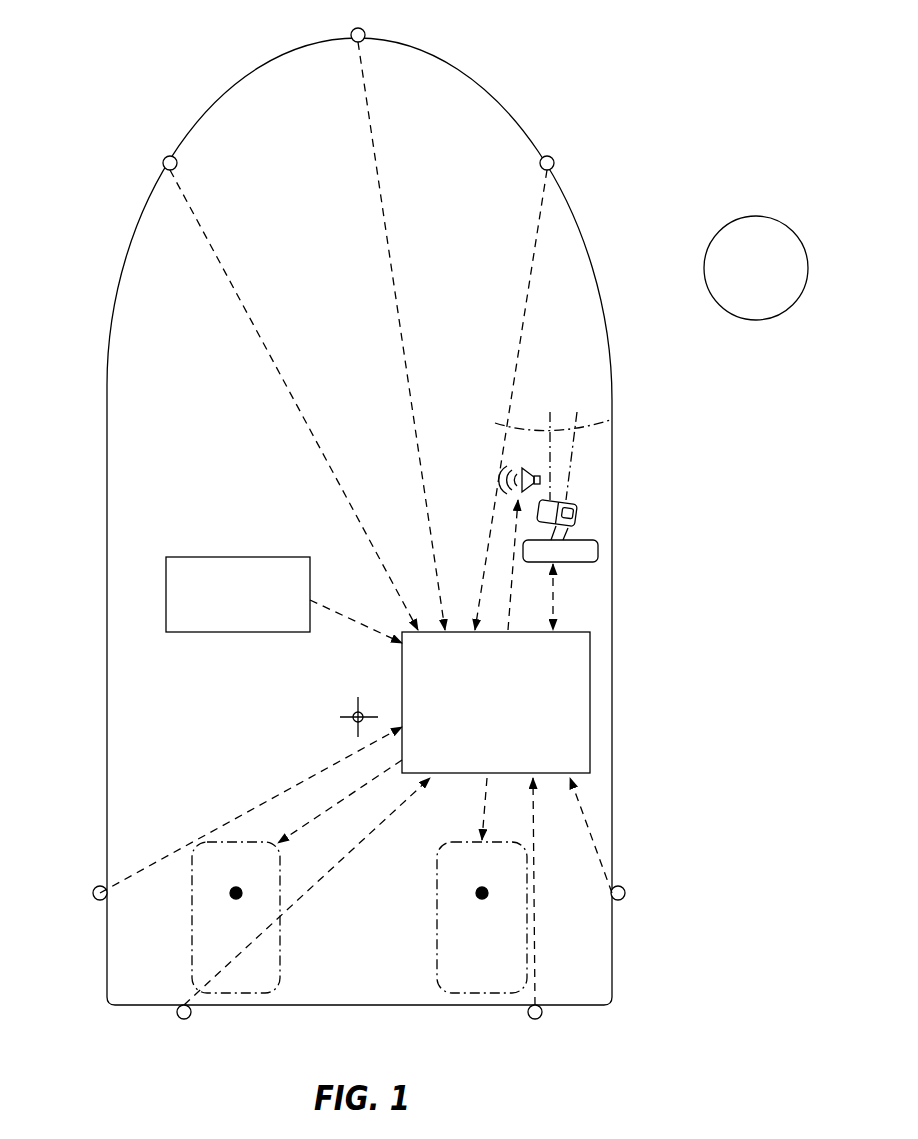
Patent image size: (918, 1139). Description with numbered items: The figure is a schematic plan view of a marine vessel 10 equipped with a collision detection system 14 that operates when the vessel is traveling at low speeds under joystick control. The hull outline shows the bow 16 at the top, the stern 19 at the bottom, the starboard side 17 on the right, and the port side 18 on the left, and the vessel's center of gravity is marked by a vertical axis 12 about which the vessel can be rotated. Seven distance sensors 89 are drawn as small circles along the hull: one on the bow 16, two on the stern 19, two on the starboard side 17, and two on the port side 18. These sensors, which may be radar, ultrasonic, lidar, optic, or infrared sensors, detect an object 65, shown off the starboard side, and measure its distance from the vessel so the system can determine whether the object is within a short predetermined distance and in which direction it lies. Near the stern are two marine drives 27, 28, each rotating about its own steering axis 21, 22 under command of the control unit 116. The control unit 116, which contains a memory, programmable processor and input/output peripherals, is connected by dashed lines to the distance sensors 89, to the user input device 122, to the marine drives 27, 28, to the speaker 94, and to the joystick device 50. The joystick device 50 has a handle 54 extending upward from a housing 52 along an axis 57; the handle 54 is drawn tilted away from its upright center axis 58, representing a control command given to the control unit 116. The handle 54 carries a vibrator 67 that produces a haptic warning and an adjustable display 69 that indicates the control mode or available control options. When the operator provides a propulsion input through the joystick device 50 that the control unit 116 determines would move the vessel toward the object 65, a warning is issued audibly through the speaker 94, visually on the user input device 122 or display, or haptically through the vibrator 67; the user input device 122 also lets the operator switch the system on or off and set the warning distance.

The marine vessel 10 is at (608, 86).
The axis 12 is at (354, 722).
The collision detection system 14 is at (357, 531).
The bow 16 is at (367, 38).
The starboard side 17 is at (611, 366).
The port side 18 is at (107, 366).
The stern 19 is at (360, 1008).
The steering axis 21 is at (235, 892).
The steering axis 22 is at (485, 892).
The marine drive 27 is at (212, 965).
The marine drive 28 is at (505, 965).
The joystick device 50 is at (602, 527).
The housing 52 is at (598, 553).
The handle 54 is at (566, 534).
The axis 57 is at (614, 418).
The upright center axis 58 is at (509, 425).
The object 65 is at (744, 281).
The vibrator 67 is at (578, 515).
The adjustable display 69 is at (575, 497).
The distance sensors 89 is at (352, 30).
The speaker 94 is at (535, 476).
The control unit 116 is at (592, 688).
The user input device 122 is at (216, 557).